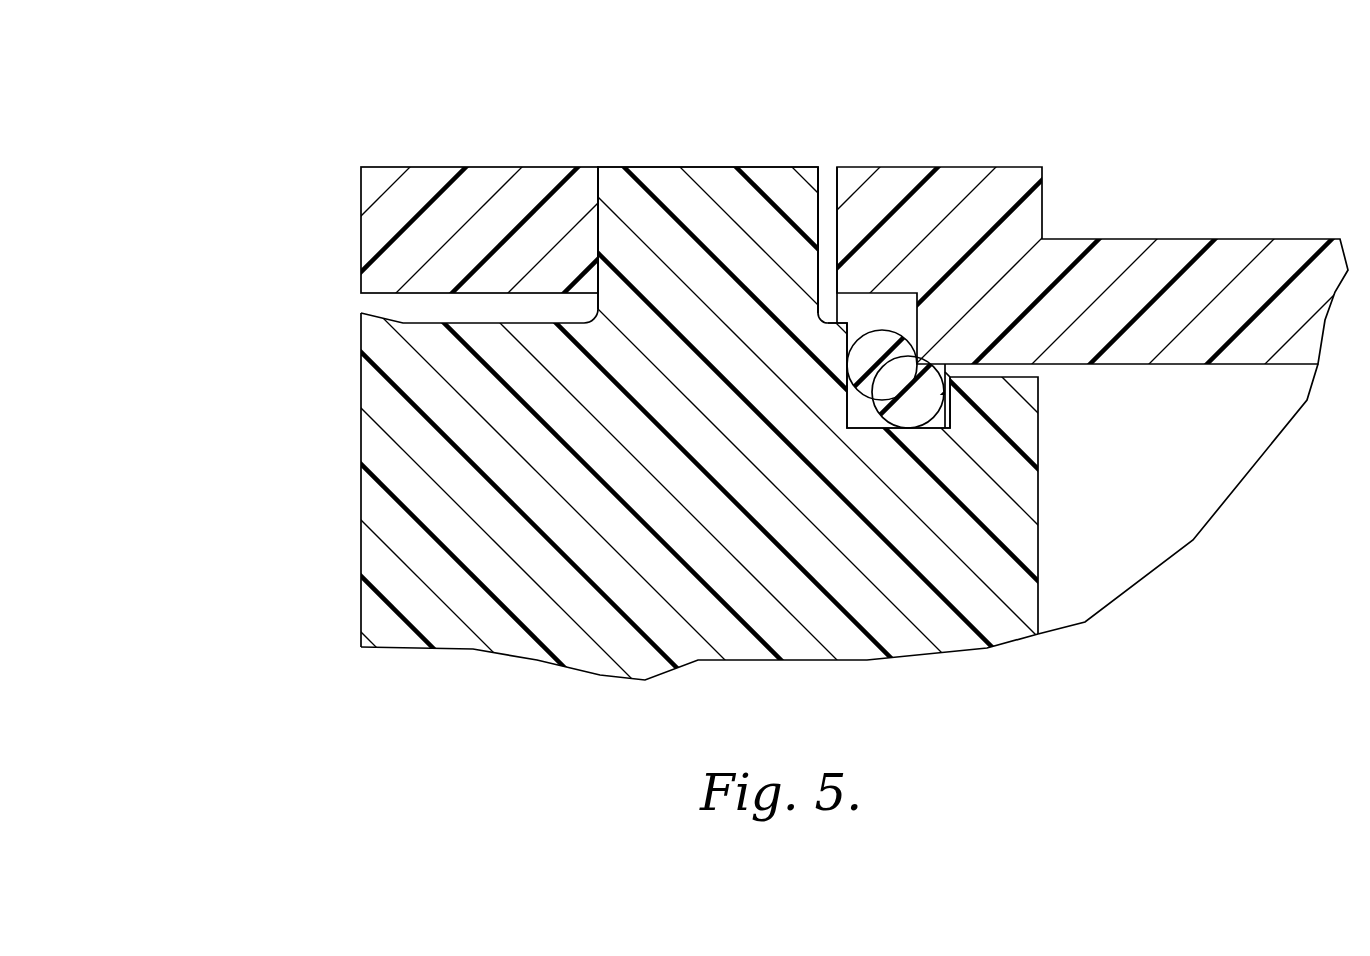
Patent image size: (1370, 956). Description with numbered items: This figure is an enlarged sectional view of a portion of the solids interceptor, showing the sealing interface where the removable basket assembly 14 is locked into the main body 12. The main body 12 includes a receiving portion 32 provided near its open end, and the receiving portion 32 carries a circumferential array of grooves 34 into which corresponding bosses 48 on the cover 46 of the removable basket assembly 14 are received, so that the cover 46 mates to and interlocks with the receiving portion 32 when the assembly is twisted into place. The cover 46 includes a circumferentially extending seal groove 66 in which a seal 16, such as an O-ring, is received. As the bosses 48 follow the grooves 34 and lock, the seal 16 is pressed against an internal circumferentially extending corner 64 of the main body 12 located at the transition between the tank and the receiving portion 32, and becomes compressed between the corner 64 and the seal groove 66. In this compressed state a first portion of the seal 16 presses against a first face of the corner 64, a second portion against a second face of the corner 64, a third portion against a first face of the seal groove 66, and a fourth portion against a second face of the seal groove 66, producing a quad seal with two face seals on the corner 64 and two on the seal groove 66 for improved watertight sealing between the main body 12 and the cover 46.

The main body 12 is at (1187, 240).
The removable basket assembly 14 is at (395, 466).
The seal 16 is at (877, 345).
The receiving portion 32 is at (400, 213).
The grooves 34 is at (828, 200).
The cover 46 is at (568, 637).
The bosses 48 is at (660, 168).
The corner 64 is at (920, 365).
The seal groove 66 is at (872, 428).